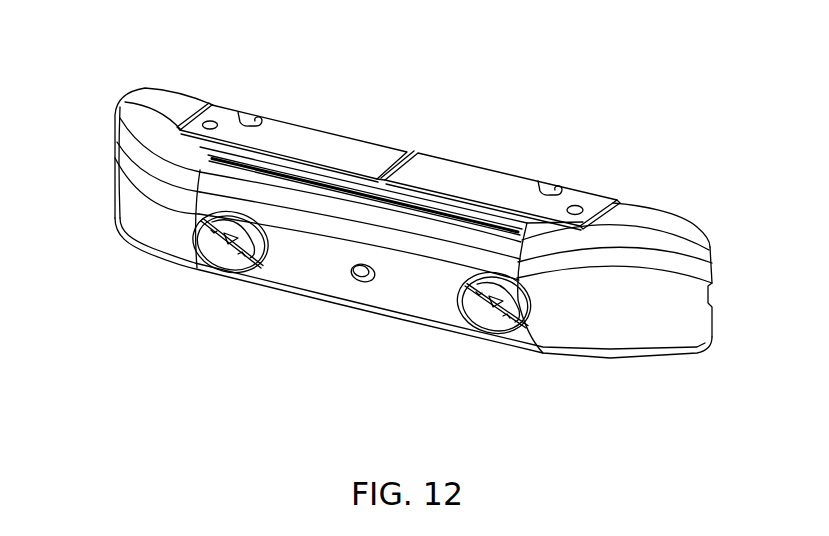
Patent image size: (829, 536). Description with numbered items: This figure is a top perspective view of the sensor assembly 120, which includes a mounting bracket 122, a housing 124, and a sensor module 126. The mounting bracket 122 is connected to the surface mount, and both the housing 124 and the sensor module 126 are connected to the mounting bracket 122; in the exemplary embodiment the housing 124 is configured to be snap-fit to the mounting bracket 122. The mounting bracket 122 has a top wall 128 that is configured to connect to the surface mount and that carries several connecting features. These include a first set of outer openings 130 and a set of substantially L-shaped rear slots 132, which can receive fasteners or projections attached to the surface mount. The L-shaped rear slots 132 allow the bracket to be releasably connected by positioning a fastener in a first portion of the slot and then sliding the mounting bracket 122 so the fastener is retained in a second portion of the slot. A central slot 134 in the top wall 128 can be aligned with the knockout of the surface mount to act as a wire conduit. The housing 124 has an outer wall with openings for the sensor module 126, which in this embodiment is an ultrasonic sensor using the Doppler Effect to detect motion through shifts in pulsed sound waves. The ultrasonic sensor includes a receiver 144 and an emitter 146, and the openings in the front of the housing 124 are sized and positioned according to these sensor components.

The sensor assembly 120 is at (663, 182).
The mounting bracket 122 is at (503, 170).
The housing 124 is at (130, 243).
The sensor module 126 is at (233, 270).
The top wall 128 is at (343, 131).
The first set of outer openings 130 is at (210, 119).
The L-shaped rear slots 132 is at (241, 118).
The central slot 134 is at (401, 153).
The receiver 144 is at (215, 253).
The emitter 146 is at (502, 334).